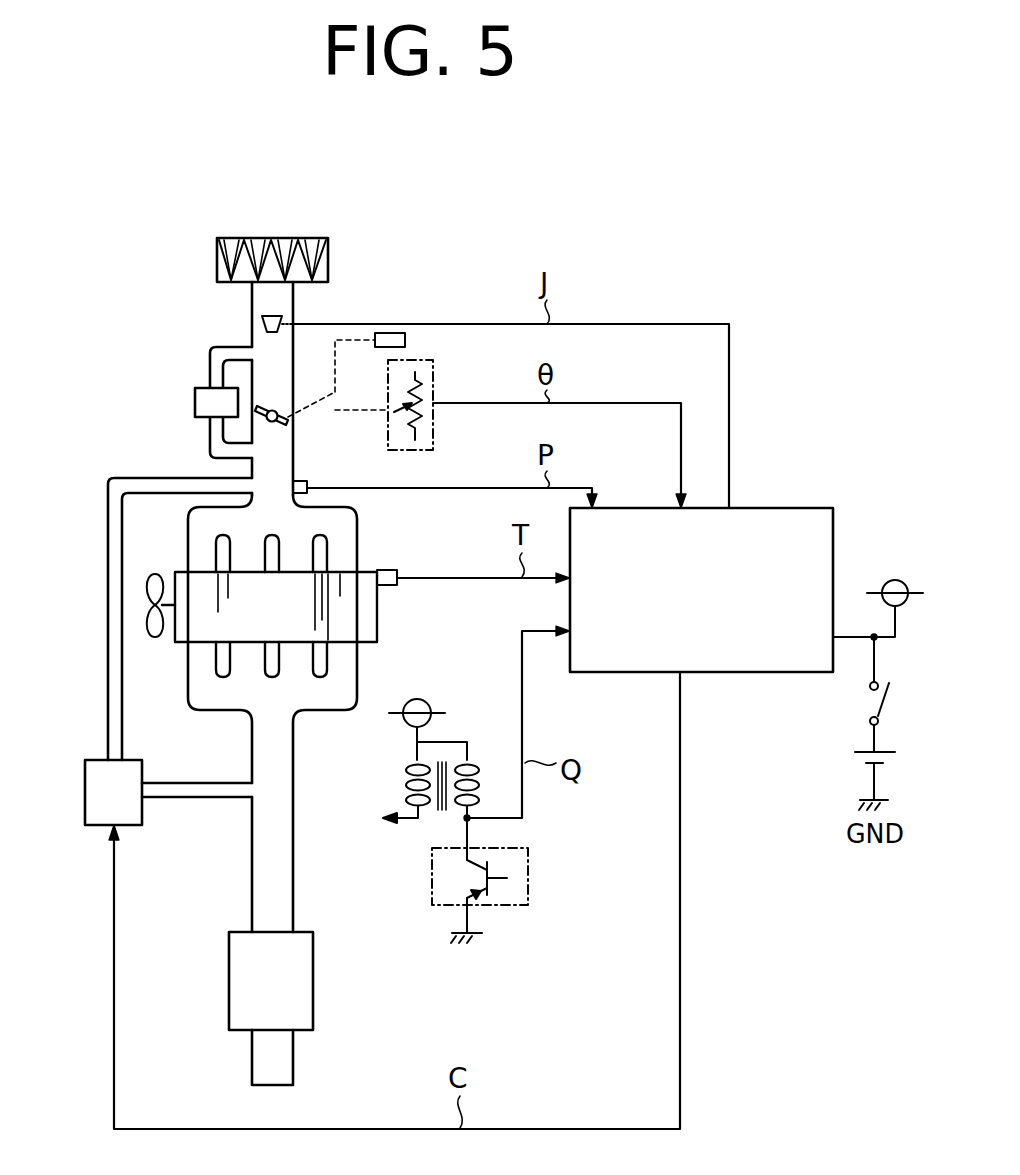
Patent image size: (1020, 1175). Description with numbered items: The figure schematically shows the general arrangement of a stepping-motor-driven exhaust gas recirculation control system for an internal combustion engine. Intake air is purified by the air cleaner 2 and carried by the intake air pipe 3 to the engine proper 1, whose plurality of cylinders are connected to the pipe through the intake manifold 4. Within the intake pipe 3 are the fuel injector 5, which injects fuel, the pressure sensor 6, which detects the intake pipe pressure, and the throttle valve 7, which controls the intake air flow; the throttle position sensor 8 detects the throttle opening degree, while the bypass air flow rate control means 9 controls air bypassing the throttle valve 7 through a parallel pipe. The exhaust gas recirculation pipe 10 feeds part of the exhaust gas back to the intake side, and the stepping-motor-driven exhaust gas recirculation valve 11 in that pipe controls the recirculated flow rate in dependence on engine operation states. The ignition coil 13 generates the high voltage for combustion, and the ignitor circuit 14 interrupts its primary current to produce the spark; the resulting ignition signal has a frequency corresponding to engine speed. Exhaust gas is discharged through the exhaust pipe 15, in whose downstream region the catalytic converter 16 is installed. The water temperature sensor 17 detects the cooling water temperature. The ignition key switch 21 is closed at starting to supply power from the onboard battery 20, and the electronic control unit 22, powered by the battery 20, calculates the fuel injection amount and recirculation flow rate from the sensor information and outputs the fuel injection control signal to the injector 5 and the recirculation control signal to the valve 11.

The engine proper 1 is at (378, 624).
The air cleaner 2 is at (328, 240).
The intake air pipe 3 is at (252, 310).
The intake manifold 4 is at (357, 513).
The fuel injector 5 is at (283, 316).
The pressure sensor 6 is at (300, 481).
The throttle valve 7 is at (279, 424).
The throttle position sensor 8 is at (433, 368).
The bypass air flow rate control means 9 is at (195, 398).
The exhaust gas recirculation pipe 10 is at (108, 568).
The exhaust gas recirculation valve 11 is at (142, 766).
The ignition coil 13 is at (406, 776).
The ignitor circuit 14 is at (528, 865).
The exhaust pipe 15 is at (293, 898).
The catalytic converter 16 is at (313, 975).
The water temperature sensor 17 is at (393, 570).
The onboard battery 20 is at (850, 757).
The ignition key switch 21 is at (860, 700).
The electronic control unit 22 is at (795, 508).